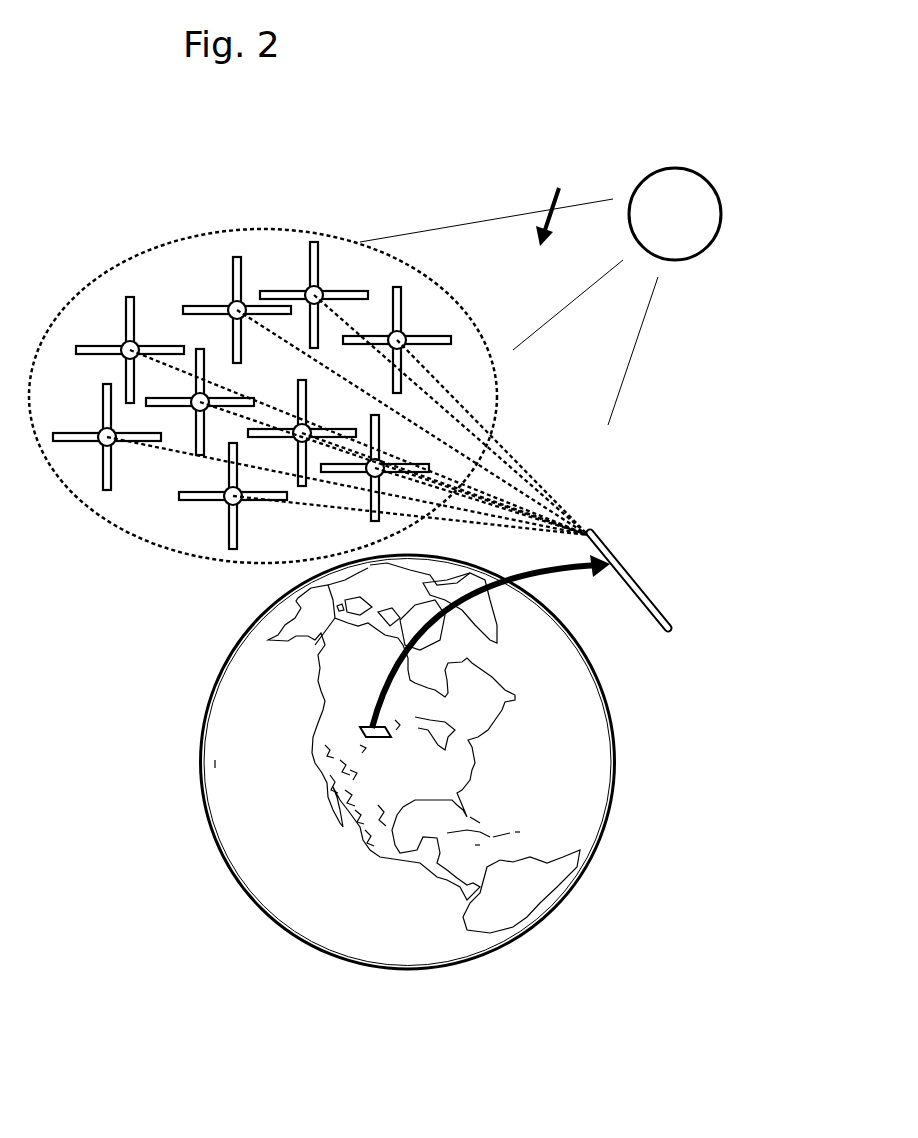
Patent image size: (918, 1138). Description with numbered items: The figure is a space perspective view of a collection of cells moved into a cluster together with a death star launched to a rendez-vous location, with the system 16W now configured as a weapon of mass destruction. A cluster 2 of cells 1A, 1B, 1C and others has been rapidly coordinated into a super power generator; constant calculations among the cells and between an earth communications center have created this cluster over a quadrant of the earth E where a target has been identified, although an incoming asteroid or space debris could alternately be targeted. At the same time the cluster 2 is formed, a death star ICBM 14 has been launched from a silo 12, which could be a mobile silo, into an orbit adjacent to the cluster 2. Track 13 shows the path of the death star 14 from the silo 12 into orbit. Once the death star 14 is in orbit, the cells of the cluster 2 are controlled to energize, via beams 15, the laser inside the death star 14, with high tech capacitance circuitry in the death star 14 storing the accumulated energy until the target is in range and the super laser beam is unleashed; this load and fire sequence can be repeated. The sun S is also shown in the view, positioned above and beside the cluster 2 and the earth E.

The cluster 2 is at (60, 317).
The cell 1A is at (232, 270).
The cell 1B is at (293, 290).
The cell 1C is at (395, 287).
The silo 12 is at (365, 727).
The track 13 is at (543, 572).
The death star ICBM 14 is at (630, 572).
The beams 15 is at (568, 518).
The system 16W is at (563, 204).
The sun S is at (705, 221).
The earth E is at (260, 838).